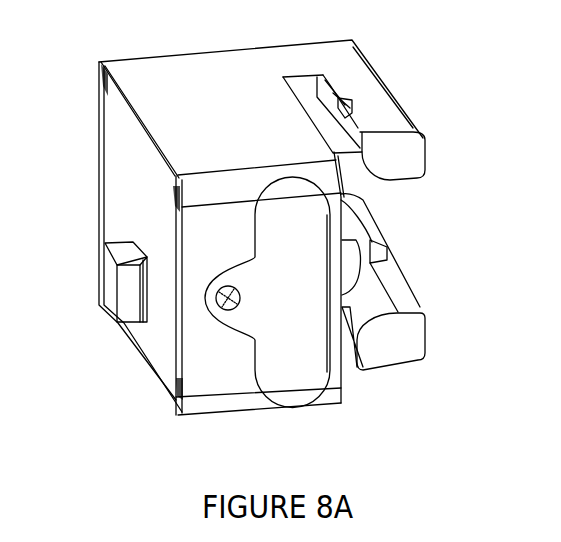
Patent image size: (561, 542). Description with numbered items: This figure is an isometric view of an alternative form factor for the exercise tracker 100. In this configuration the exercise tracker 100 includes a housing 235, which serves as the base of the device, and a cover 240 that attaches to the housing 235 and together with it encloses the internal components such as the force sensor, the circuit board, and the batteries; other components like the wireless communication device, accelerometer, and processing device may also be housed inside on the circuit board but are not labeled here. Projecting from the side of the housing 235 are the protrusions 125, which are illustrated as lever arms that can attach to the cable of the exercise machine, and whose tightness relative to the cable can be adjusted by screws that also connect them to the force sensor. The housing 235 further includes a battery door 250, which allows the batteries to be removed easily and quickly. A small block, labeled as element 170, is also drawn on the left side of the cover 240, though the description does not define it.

The exercise tracker 100 is at (476, 79).
The protrusions 125 is at (427, 330).
The button 170 is at (122, 325).
The housing 235 is at (152, 53).
The cover 240 is at (97, 181).
The battery door 250 is at (310, 404).